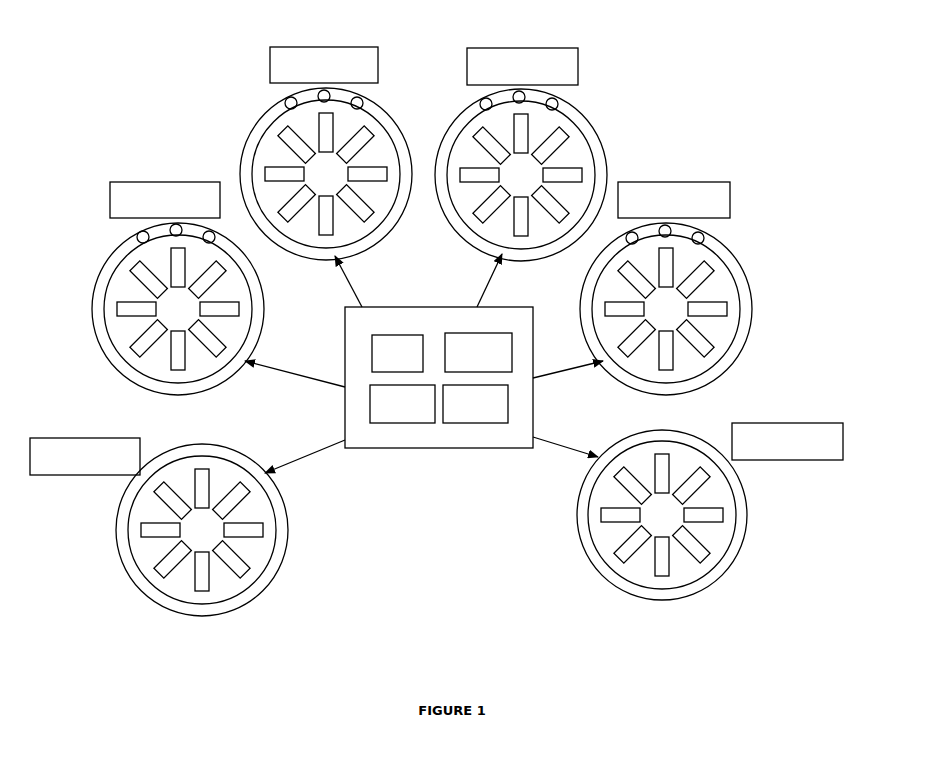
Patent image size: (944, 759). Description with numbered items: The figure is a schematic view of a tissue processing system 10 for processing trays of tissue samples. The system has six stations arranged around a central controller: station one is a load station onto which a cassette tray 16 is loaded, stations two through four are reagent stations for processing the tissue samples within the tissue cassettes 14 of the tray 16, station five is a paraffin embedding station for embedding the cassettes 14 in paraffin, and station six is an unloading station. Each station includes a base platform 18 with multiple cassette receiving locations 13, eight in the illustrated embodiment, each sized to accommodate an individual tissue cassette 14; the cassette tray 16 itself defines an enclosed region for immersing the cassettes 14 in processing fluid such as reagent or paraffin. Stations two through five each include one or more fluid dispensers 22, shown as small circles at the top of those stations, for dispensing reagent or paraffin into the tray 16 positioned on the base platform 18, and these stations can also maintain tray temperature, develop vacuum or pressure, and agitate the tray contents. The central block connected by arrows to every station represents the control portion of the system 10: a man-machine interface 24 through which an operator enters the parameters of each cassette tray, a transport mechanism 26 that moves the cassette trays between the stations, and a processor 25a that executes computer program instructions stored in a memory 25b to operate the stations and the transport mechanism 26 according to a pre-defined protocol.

The tissue processing system 10 is at (423, 23).
The cassette receiving location 13 is at (158, 576).
The tissue cassette 14 is at (211, 586).
The cassette tray 16 is at (274, 559).
The base platform 18 is at (289, 515).
The fluid dispenser 22 is at (137, 234).
The man-machine interface 24 is at (397, 353).
The processor 25a is at (402, 404).
The memory 25b is at (475, 404).
The transport mechanism 26 is at (478, 352).